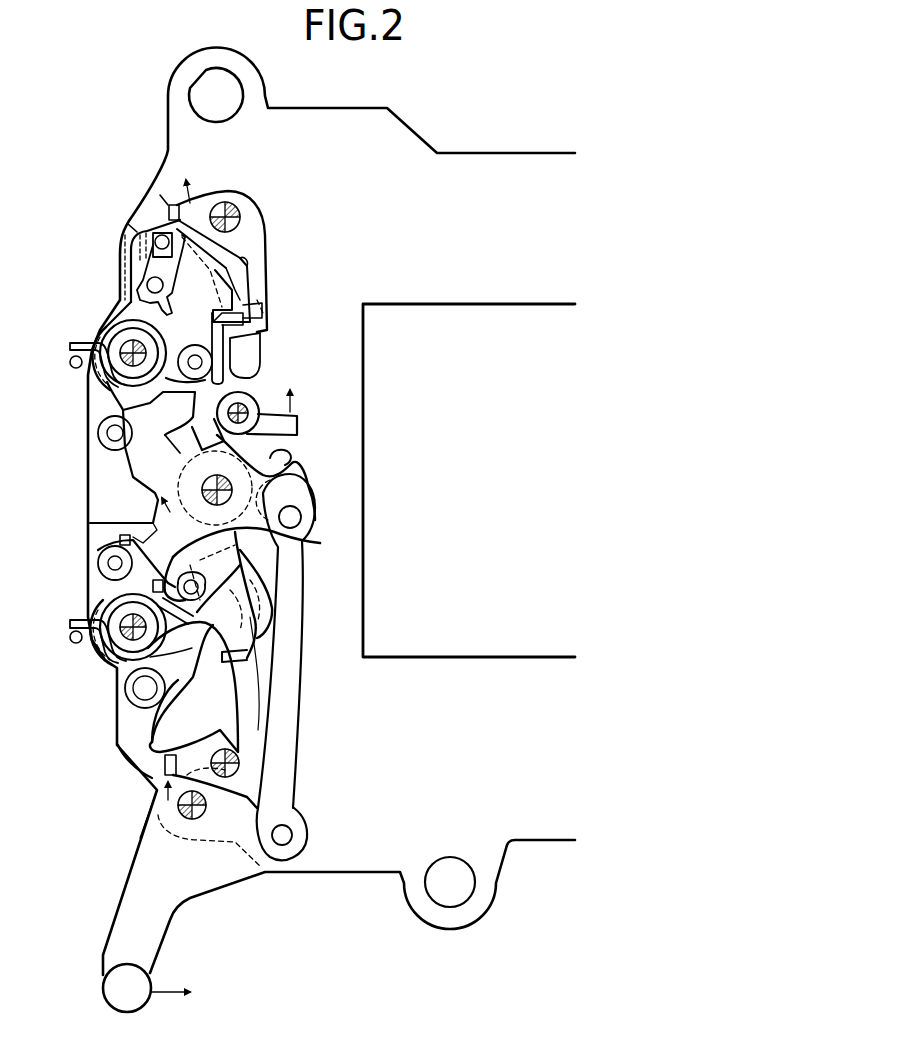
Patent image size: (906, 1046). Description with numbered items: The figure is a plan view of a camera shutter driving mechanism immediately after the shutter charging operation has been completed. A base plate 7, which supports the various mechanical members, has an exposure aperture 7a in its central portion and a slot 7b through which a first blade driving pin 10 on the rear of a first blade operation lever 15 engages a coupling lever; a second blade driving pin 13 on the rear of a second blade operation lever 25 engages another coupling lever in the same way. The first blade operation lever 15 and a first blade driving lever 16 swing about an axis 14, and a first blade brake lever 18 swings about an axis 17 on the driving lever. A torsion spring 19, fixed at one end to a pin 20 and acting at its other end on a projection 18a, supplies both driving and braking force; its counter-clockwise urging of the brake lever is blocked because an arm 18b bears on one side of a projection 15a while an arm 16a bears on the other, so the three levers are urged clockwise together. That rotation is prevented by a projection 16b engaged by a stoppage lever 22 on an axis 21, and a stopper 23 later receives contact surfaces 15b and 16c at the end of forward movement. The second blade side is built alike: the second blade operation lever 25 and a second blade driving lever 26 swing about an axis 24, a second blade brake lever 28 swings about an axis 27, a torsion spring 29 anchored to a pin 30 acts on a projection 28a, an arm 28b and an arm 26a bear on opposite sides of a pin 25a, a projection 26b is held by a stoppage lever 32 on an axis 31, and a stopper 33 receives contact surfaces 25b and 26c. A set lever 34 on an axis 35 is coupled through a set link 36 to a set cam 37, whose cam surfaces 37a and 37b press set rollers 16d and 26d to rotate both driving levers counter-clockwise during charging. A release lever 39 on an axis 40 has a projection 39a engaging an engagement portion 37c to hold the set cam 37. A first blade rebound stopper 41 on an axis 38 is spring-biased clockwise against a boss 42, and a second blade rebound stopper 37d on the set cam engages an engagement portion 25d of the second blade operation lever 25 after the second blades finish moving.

The base plate 7 is at (375, 873).
The aperture 7a is at (560, 655).
The slot 7b is at (120, 741).
The first blade driving pin 10 is at (255, 617).
The second blade driving pin 13 is at (150, 260).
The axis 14 is at (115, 638).
The first blade operation lever 15 is at (105, 578).
The projection 15a is at (230, 551).
The contact surface 15b is at (218, 633).
The first blade driving lever 16 is at (97, 560).
The arm 16a is at (225, 546).
The projection 16b is at (240, 652).
The contact surface 16c is at (133, 681).
The set roller 16d is at (100, 540).
The axis 17 is at (100, 608).
The first blade brake lever 18 is at (217, 590).
The projection 18a is at (150, 657).
The arm 18b is at (212, 571).
The torsion spring 19 is at (72, 628).
The pin 20 is at (72, 640).
The axis 21 is at (240, 766).
The stoppage lever 22 is at (262, 700).
The stopper 23 is at (150, 715).
The axis 24 is at (125, 360).
The second blade operation lever 25 is at (190, 261).
The pin 25a is at (162, 203).
The contact surface 25b is at (235, 373).
The engagement portion 25d is at (235, 277).
The second blade driving lever 26 is at (120, 247).
The arm 26a is at (130, 228).
The projection 26b is at (225, 311).
The contact surface 26c is at (105, 424).
The set roller 26d is at (235, 342).
The axis 27 is at (147, 289).
The second blade brake lever 28 is at (235, 299).
The projection 28a is at (225, 327).
The arm 28b is at (185, 249).
The torsion spring 29 is at (70, 346).
The pin 30 is at (70, 363).
The axis 31 is at (241, 214).
The stoppage lever 32 is at (228, 188).
The stopper 33 is at (98, 437).
The set lever 34 is at (140, 838).
The axis 35 is at (150, 808).
The set link 36 is at (300, 683).
The set cam 37 is at (133, 480).
The cam surface 37a is at (105, 591).
The cam surface 37b is at (100, 397).
The engagement portion 37c is at (258, 436).
The second blade rebound stopper 37d is at (268, 456).
The axis 38 is at (270, 500).
The release lever 39 is at (298, 412).
The projection 39a is at (205, 444).
The axis 40 is at (260, 415).
The first blade rebound stopper 41 is at (260, 478).
The boss 42 is at (110, 523).